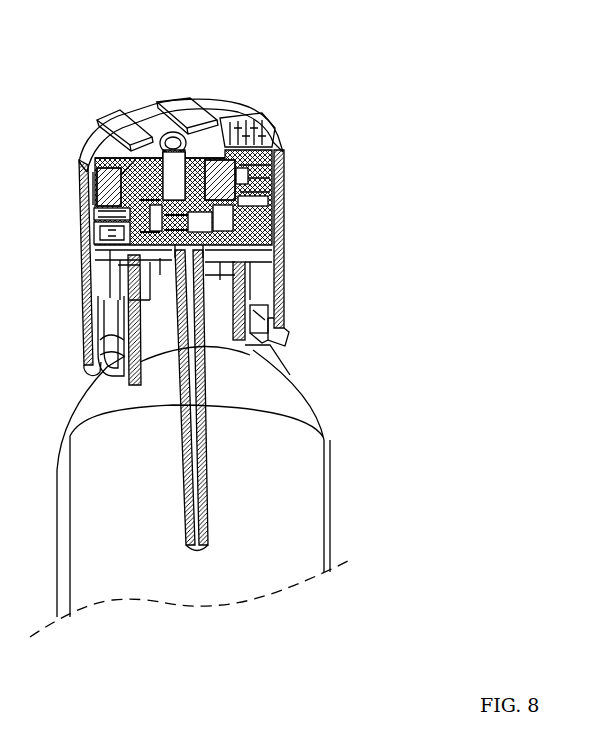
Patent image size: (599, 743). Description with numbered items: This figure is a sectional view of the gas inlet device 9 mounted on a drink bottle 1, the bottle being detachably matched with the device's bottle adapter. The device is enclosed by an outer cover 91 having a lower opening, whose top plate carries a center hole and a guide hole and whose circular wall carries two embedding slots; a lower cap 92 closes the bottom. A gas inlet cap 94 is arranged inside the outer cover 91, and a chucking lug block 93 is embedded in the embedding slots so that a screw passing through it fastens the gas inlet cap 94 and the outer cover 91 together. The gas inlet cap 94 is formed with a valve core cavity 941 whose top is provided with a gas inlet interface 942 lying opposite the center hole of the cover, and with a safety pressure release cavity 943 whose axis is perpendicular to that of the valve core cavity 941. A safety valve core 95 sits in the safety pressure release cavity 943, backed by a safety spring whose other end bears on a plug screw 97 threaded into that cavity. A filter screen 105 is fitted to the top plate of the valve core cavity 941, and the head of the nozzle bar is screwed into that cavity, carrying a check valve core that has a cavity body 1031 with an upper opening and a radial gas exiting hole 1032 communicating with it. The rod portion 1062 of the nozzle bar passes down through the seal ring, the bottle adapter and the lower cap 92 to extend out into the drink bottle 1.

The drink bottle 1 is at (148, 598).
The gas inlet device 9 is at (310, 242).
The outer cover 91 is at (283, 292).
The lower cap 92 is at (283, 340).
The chucking lug block 93 is at (84, 190).
The gas inlet cap 94 is at (250, 230).
The safety valve core 95 is at (95, 238).
The plug screw 97 is at (262, 198).
The filter screen 105 is at (174, 146).
The valve core cavity 941 is at (262, 172).
The gas inlet interface 942 is at (233, 116).
The safety pressure release cavity 943 is at (94, 212).
The cavity body 1031 is at (97, 148).
The radial gas exiting hole 1032 is at (98, 280).
The rod portion 1062 is at (206, 470).